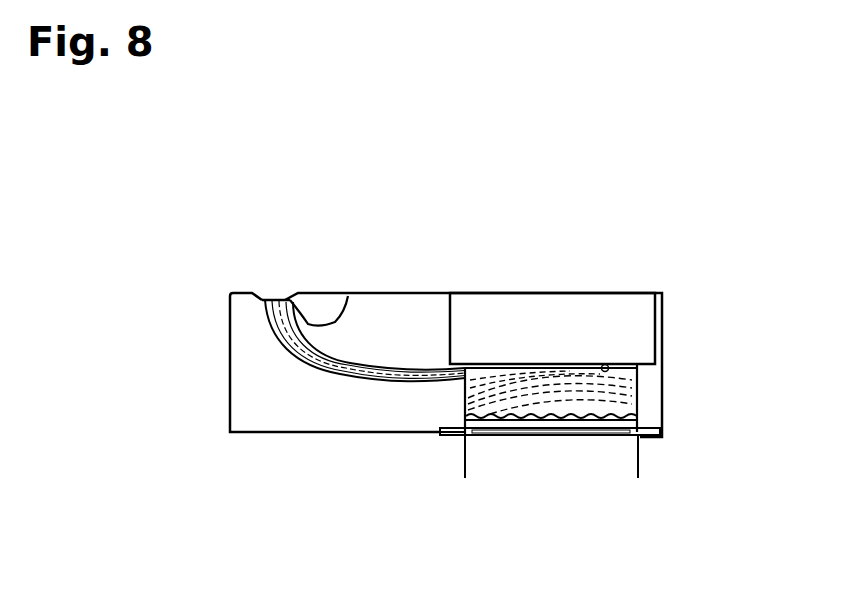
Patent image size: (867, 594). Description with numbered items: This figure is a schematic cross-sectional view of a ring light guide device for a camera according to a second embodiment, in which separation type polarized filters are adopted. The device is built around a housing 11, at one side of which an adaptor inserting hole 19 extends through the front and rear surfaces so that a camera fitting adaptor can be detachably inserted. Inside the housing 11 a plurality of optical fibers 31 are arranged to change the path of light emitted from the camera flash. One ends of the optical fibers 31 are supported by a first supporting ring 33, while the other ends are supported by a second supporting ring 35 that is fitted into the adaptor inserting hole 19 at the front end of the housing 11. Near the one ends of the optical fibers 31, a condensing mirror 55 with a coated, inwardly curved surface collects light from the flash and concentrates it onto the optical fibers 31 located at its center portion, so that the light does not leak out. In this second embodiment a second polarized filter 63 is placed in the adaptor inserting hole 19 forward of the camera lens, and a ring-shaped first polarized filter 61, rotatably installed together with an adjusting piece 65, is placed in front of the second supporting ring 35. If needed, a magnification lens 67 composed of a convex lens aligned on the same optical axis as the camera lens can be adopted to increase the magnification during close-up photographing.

The housing 11 is at (355, 435).
The adaptor inserting hole 19 is at (642, 333).
The optical fibers 31 is at (330, 373).
The first supporting ring 33 is at (350, 293).
The second supporting ring 35 is at (640, 415).
The condensing mirror 55 is at (265, 300).
The first polarized filter 61 is at (475, 435).
The second polarized filter 63 is at (605, 365).
The adjusting piece 65 is at (662, 432).
The magnification lens 67 is at (535, 435).